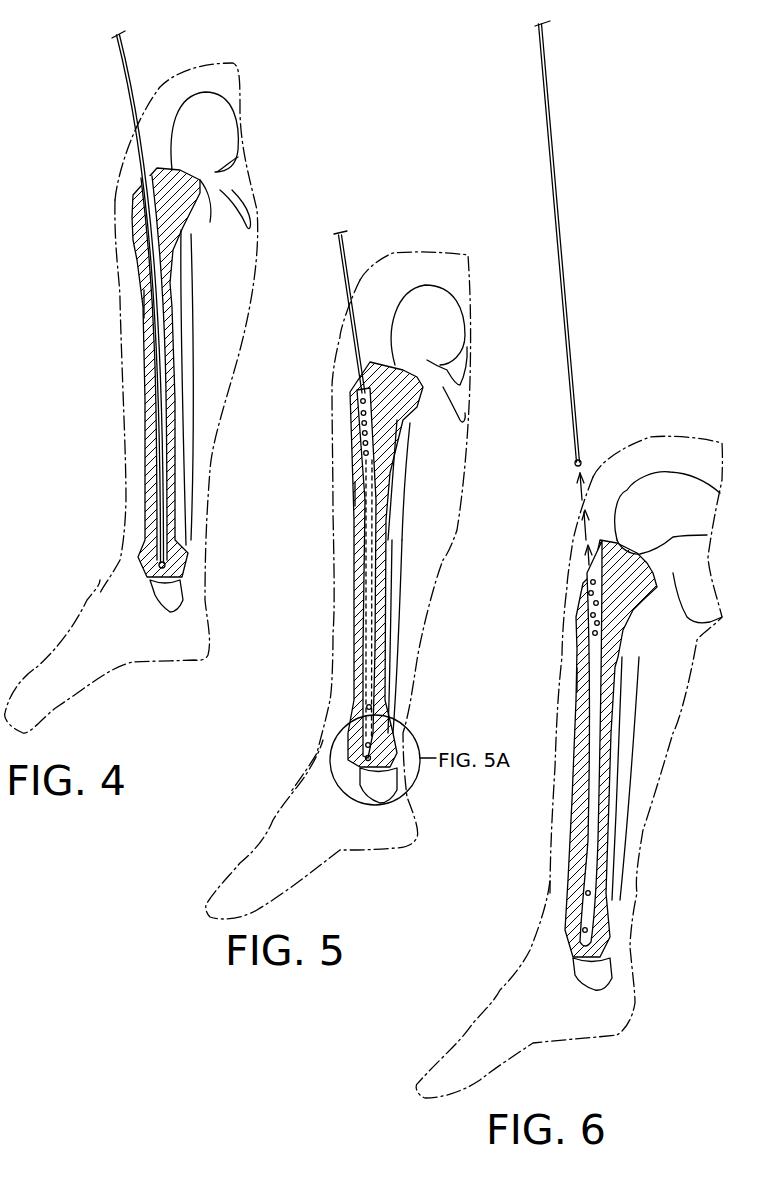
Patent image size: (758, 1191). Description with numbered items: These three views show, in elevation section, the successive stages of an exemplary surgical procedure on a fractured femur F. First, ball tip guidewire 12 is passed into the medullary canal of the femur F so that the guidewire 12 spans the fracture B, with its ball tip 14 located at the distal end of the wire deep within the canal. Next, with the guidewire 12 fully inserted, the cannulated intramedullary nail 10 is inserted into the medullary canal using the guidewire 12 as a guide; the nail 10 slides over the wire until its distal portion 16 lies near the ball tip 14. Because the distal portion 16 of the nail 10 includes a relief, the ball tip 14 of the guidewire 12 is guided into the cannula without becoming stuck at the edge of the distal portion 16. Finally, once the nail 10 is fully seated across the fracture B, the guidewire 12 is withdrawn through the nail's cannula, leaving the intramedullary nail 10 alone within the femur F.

In FIG. 5, the intramedullary nail 10 is at (369, 494).
In FIG. 6, the intramedullary nail 10 is at (600, 693).
In FIG. 4, the guidewire 12 is at (126, 70).
In FIG. 5, the guidewire 12 is at (342, 262).
In FIG. 6, the guidewire 12 is at (562, 218).
In FIG. 4, the ball tip 14 is at (158, 563).
In FIG. 5, the ball tip 14 is at (365, 765).
In FIG. 6, the ball tip 14 is at (575, 464).
In FIG. 5, the distal portion 16 is at (328, 735).
In FIG. 4, the femur F is at (143, 305).
In FIG. 5, the femur F is at (357, 493).
In FIG. 6, the femur F is at (579, 679).
In FIG. 4, the fracture B is at (152, 386).
In FIG. 5, the fracture B is at (364, 573).
In FIG. 6, the fracture B is at (600, 768).